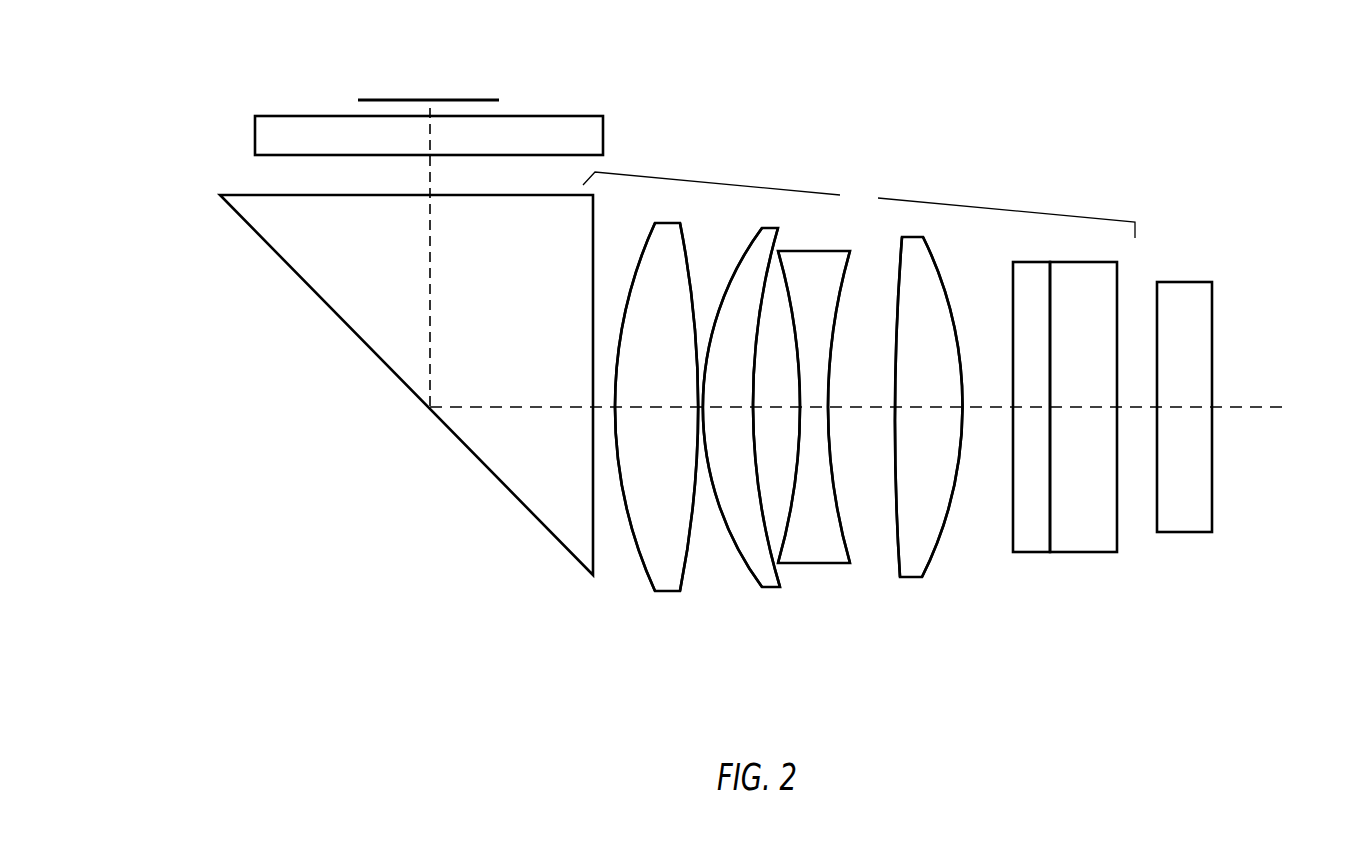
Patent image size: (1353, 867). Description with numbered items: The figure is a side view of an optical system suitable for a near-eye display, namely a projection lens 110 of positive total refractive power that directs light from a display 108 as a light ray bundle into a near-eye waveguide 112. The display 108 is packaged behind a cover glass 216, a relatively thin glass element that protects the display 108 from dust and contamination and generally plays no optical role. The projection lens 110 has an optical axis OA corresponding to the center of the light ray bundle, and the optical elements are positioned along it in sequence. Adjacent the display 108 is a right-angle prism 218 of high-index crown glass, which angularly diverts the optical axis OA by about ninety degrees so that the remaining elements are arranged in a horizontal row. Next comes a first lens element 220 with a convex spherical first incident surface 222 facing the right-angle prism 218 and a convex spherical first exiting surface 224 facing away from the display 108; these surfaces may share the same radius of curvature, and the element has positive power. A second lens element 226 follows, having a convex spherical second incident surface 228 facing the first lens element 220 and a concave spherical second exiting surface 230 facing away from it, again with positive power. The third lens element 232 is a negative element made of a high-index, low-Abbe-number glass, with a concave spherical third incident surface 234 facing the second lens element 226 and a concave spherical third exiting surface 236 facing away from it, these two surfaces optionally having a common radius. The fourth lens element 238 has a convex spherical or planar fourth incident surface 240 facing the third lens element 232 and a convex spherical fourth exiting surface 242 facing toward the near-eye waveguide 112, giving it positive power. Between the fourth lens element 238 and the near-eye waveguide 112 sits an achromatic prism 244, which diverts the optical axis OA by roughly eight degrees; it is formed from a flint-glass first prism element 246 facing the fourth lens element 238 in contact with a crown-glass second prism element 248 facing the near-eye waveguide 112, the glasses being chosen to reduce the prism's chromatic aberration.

The display 108 is at (466, 99).
The projection lens 110 is at (859, 205).
The near-eye waveguide 112 is at (1185, 282).
The cover glass 216 is at (254, 131).
The right-angle prism 218 is at (283, 262).
The first lens element 220 is at (668, 222).
The first incident surface 222 is at (643, 571).
The first exiting surface 224 is at (683, 579).
The second lens element 226 is at (749, 248).
The second incident surface 228 is at (747, 568).
The second exiting surface 230 is at (764, 530).
The third lens element 232 is at (840, 250).
The third incident surface 234 is at (788, 520).
The third exiting surface 236 is at (840, 520).
The fourth lens element 238 is at (913, 237).
The fourth incident surface 240 is at (897, 543).
The fourth exiting surface 242 is at (947, 520).
The achromatic prism 244 is at (1065, 421).
The first prism element 246 is at (1030, 553).
The second prism element 248 is at (1080, 553).
The optical axis OA is at (1261, 406).